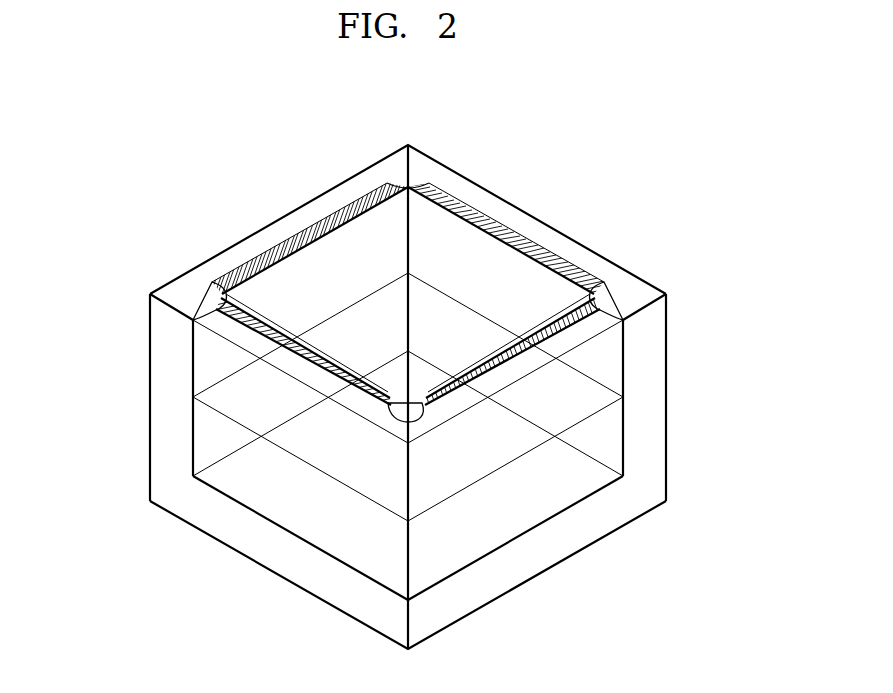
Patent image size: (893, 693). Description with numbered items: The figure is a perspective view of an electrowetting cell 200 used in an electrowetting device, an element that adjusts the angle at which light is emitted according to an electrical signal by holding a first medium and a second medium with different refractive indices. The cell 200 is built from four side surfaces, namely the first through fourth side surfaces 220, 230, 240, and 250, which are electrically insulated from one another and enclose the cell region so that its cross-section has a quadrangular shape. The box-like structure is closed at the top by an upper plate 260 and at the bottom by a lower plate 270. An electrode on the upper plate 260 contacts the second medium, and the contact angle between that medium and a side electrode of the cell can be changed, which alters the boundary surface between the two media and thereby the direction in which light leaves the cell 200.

The electrowetting cell 200 is at (719, 209).
The first side surface 220 is at (565, 482).
The second side surface 230 is at (288, 512).
The third side surface 240 is at (208, 358).
The fourth side surface 250 is at (615, 365).
The upper plate 260 is at (290, 282).
The lower plate 270 is at (427, 572).